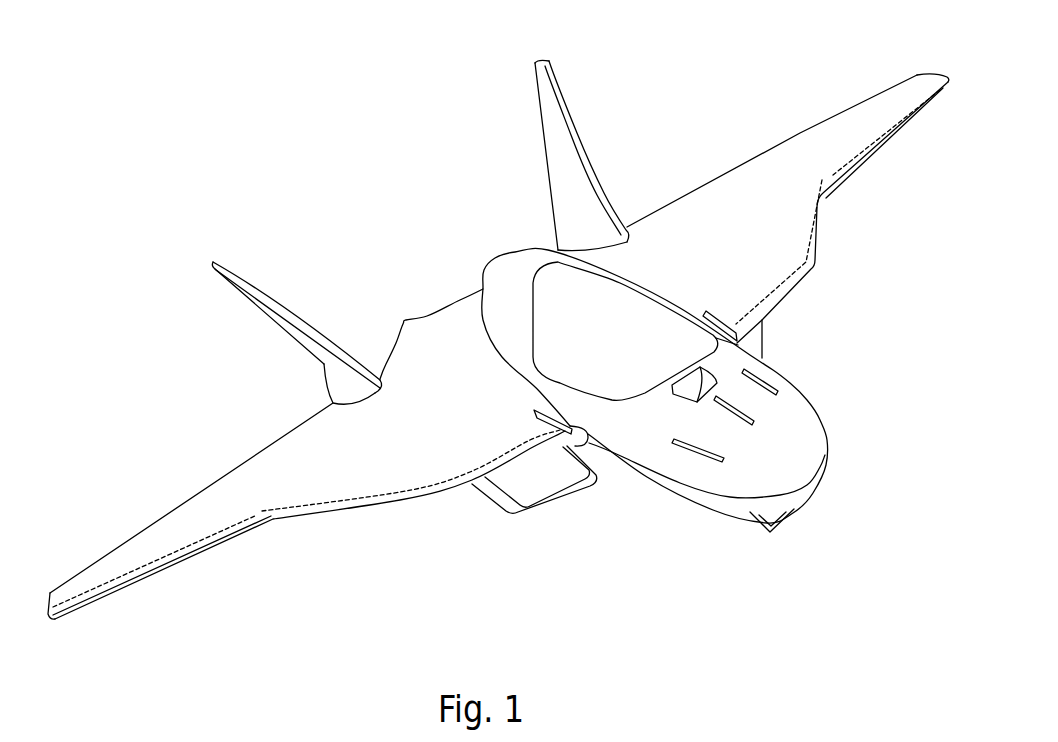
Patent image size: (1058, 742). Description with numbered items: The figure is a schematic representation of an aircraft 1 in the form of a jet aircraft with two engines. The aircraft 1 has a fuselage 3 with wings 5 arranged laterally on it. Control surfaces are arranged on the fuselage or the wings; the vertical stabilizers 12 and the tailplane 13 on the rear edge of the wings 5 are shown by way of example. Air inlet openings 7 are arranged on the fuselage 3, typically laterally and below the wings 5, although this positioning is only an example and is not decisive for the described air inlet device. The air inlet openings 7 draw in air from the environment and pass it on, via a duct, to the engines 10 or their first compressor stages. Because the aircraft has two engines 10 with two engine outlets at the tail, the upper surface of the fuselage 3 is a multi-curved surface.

The aircraft 1 is at (841, 376).
The fuselage 3 is at (783, 442).
The wings 5 is at (765, 235).
The air inlet openings 7 is at (577, 510).
The engine 10 is at (397, 316).
The vertical stabilizers 12 is at (257, 305).
The tailplane 13 is at (233, 468).